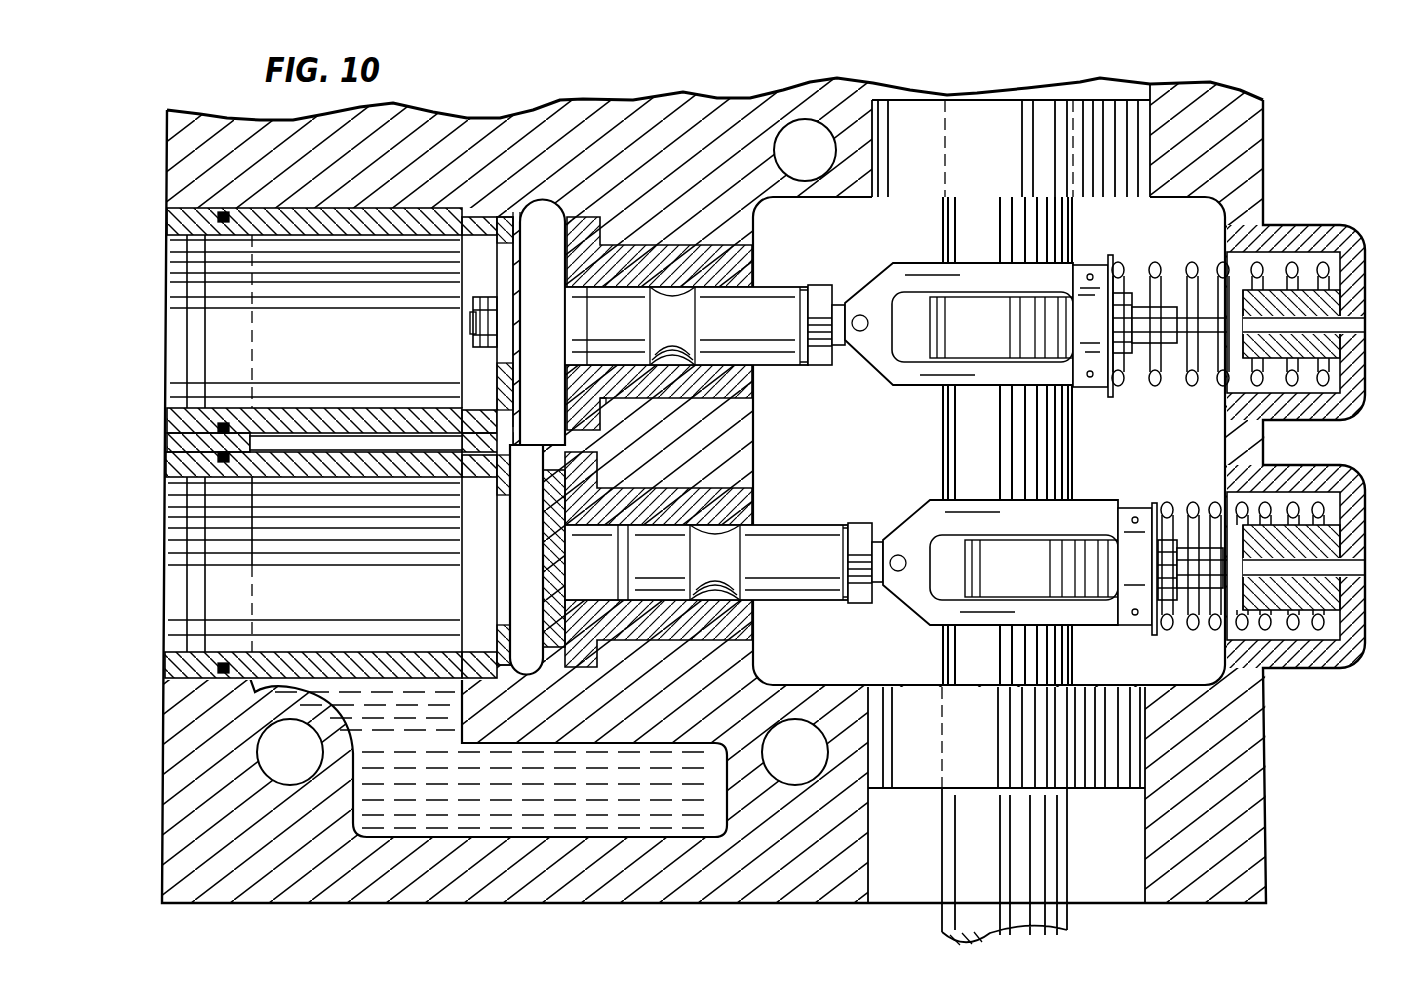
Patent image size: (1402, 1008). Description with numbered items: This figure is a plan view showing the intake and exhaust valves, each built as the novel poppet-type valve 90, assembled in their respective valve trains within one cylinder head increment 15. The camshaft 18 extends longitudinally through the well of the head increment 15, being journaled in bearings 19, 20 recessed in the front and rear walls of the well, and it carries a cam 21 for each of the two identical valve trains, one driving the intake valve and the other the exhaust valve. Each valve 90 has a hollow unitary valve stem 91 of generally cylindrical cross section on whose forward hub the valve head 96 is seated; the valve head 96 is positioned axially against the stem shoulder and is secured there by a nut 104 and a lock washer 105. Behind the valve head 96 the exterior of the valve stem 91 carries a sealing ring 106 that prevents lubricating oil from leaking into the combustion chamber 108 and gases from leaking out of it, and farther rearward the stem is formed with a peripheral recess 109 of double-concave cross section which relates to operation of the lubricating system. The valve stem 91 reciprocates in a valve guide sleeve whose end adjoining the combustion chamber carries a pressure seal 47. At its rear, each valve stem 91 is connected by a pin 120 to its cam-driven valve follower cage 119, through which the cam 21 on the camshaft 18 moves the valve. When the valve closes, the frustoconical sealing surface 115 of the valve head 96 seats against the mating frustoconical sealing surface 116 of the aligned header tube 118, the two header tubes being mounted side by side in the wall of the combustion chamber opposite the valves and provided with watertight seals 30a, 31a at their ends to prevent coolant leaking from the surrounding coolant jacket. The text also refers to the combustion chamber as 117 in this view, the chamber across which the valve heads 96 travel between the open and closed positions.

The cylinder head increment 15 is at (1272, 138).
The camshaft 18 is at (1062, 455).
The bearing 19 is at (918, 775).
The bearing 20 is at (978, 118).
The cam 21 is at (1042, 298).
The watertight seal 30a is at (232, 236).
The watertight seal 31a is at (456, 232).
The pressure seal 47 is at (606, 404).
The valve 90 is at (812, 285).
The valve stem 91 is at (780, 290).
The valve head 96 is at (500, 255).
The nut 104 is at (478, 300).
The lock washer 105 is at (480, 336).
The sealing ring 106 is at (490, 358).
The combustion chamber 108 is at (540, 212).
The peripheral recess 109 is at (672, 300).
The frustoconical sealing surface of the valve head 115 is at (495, 268).
The frustoconical sealing surface of the header tube 116 is at (497, 500).
The cylinder wall 117 is at (268, 205).
The header tube 118 is at (232, 686).
The valve follower cage 119 is at (868, 272).
The pin 120 is at (865, 332).